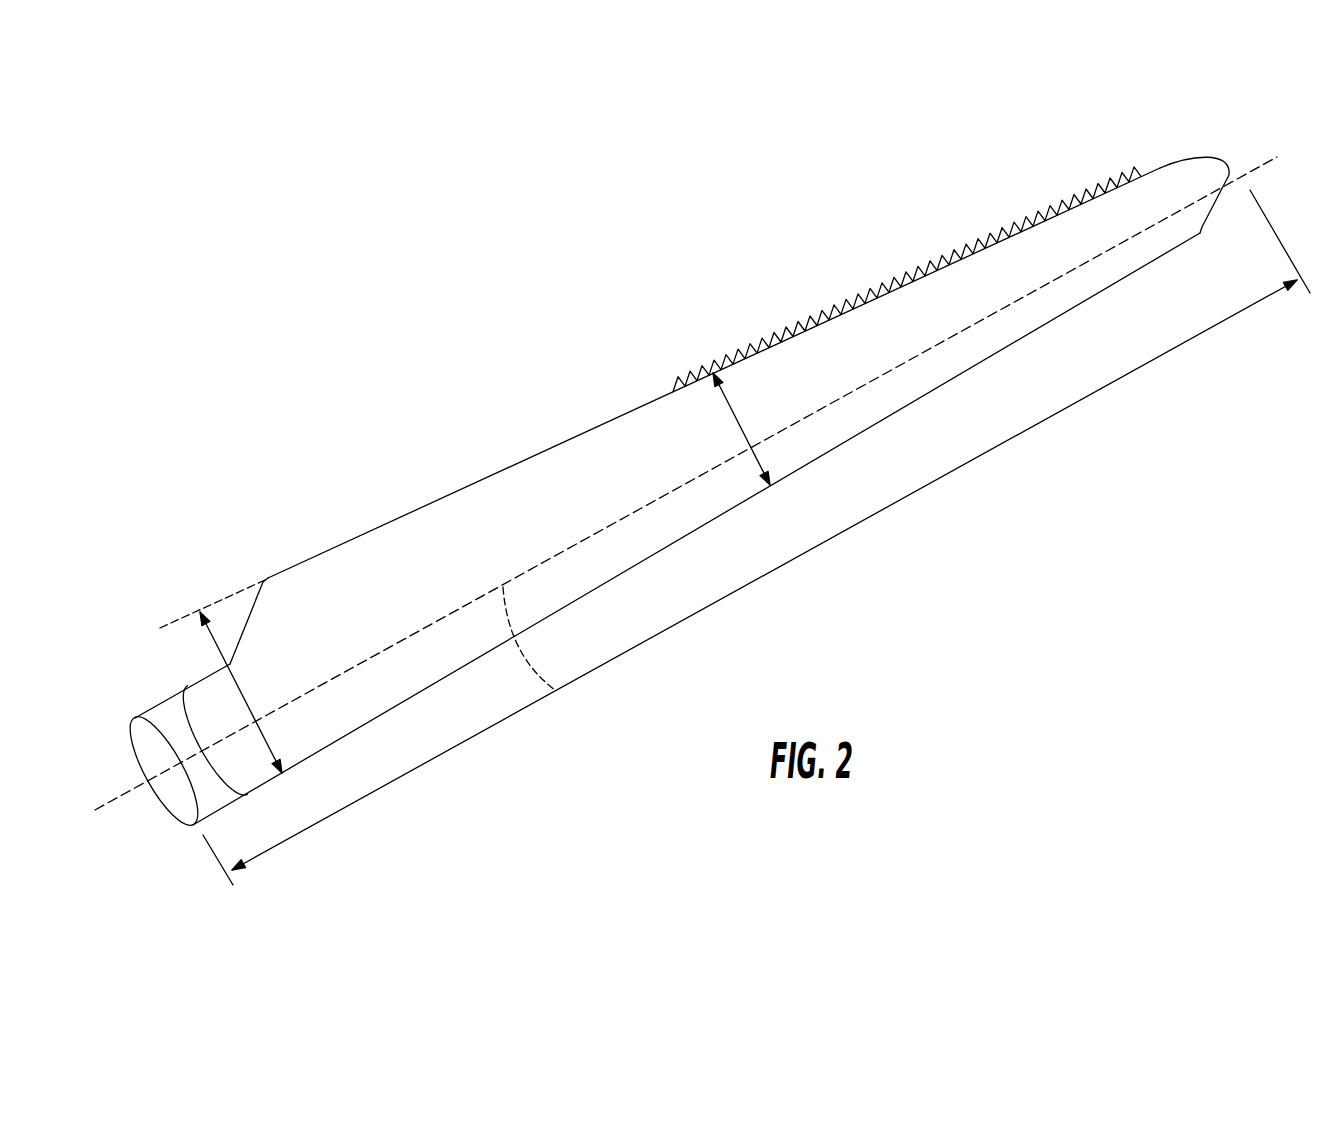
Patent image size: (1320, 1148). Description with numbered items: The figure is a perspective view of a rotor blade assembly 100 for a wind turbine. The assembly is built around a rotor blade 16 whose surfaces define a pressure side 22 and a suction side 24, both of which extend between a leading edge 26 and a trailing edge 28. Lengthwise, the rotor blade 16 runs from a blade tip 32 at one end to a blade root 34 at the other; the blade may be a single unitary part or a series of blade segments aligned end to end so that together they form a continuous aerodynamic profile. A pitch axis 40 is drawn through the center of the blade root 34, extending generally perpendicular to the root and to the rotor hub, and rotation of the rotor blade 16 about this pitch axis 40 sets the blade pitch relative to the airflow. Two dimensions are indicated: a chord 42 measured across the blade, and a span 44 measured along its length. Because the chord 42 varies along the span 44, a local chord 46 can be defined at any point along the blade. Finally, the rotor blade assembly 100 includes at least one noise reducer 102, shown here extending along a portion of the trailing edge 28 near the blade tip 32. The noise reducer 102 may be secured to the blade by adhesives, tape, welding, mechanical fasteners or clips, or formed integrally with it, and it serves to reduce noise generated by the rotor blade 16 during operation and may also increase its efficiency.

The rotor blade assembly 100 is at (490, 340).
The rotor blade 16 is at (694, 466).
The pressure side 22 is at (369, 542).
The suction side 24 is at (693, 532).
The leading edge 26 is at (390, 710).
The trailing edge 28 is at (288, 570).
The blade tip 32 is at (1205, 177).
The blade root 34 is at (213, 780).
The pitch axis 40 is at (555, 690).
The chord 42 is at (235, 681).
The span 44 is at (790, 562).
The local chord 46 is at (740, 430).
The noise reducer 102 is at (892, 265).